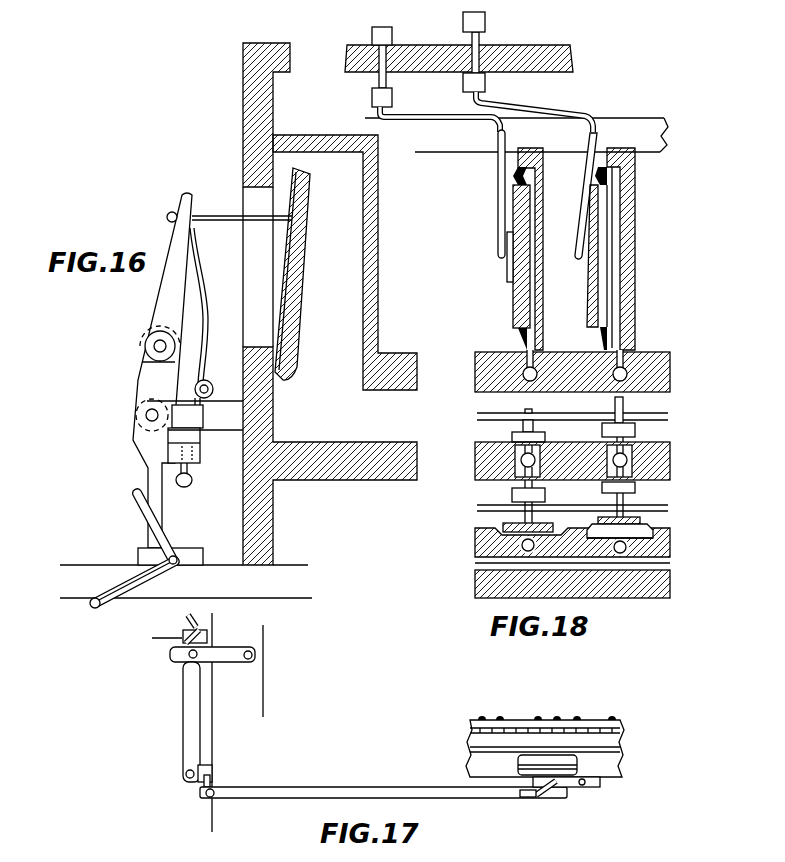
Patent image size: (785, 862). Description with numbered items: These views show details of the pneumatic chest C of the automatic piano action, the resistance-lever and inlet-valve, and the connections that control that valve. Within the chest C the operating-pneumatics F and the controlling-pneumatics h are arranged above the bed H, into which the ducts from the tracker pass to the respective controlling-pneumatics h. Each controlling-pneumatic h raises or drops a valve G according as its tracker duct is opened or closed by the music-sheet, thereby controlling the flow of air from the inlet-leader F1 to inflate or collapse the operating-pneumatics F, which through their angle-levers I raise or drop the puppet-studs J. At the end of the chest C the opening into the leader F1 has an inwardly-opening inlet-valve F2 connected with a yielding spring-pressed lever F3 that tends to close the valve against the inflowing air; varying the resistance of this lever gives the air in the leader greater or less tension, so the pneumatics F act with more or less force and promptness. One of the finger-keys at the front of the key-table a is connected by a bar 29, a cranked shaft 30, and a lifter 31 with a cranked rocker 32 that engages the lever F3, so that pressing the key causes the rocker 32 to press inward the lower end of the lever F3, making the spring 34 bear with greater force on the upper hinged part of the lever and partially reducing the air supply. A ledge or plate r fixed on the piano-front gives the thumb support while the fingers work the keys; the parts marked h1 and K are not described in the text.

In FIG. 16, the cranked rocker 32 is at (137, 507).
In FIG. 17, the cranked rocker 32 is at (184, 617).
In FIG. 16, the spring 34 is at (210, 316).
In FIG. 17, the lifter 31 is at (193, 664).
In FIG. 17, the cranked shaft 30 is at (185, 733).
In FIG. 17, the bar 29 is at (383, 779).
In FIG. 16, the spring-pressed lever F3 is at (153, 316).
In FIG. 16, the inlet-valve F2 is at (306, 274).
In FIG. 16, the operating-pneumatics F is at (345, 283).
In FIG. 18, the operating-pneumatics F is at (617, 257).
In FIG. 16, the pneumatic chest C is at (238, 320).
In FIG. 18, the pneumatic chest C is at (507, 321).
In FIG. 18, the puppet-studs J is at (416, 59).
In FIG. 18, the angle-levers I is at (580, 231).
In FIG. 18, the inlet-leader F1 is at (543, 425).
In FIG. 18, the valve G is at (545, 495).
In FIG. 18, the controlling-pneumatic h is at (640, 523).
In FIG. 18, the bed H is at (485, 545).
In FIG. 18, the plate h1 is at (655, 553).
In FIG. 17, the keyboard K is at (547, 706).
In FIG. 17, the ledge or plate r is at (567, 760).
In FIG. 17, the key-table a is at (553, 758).